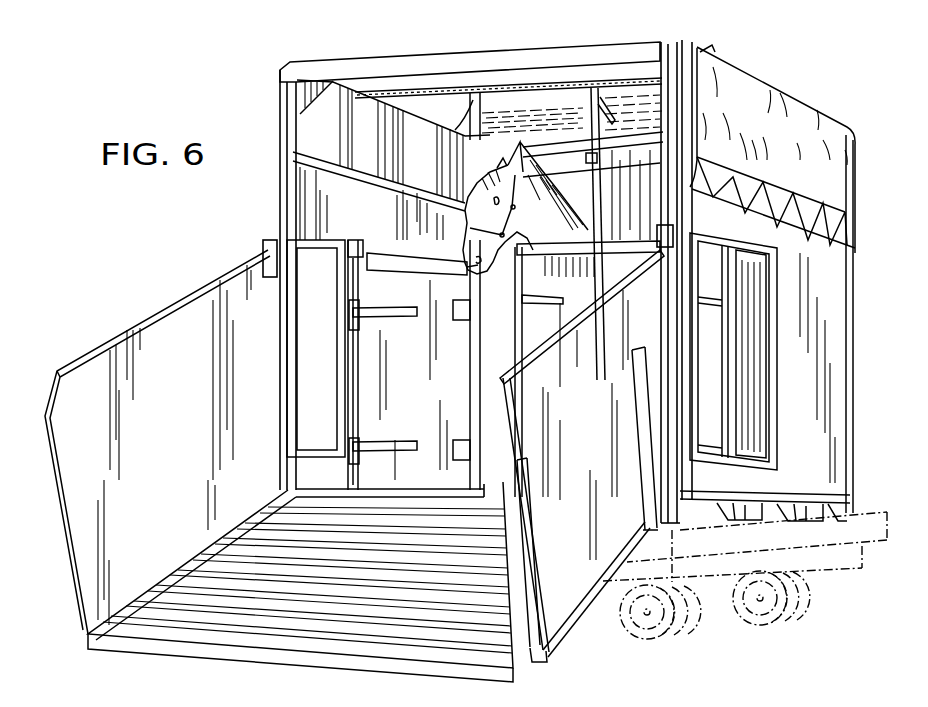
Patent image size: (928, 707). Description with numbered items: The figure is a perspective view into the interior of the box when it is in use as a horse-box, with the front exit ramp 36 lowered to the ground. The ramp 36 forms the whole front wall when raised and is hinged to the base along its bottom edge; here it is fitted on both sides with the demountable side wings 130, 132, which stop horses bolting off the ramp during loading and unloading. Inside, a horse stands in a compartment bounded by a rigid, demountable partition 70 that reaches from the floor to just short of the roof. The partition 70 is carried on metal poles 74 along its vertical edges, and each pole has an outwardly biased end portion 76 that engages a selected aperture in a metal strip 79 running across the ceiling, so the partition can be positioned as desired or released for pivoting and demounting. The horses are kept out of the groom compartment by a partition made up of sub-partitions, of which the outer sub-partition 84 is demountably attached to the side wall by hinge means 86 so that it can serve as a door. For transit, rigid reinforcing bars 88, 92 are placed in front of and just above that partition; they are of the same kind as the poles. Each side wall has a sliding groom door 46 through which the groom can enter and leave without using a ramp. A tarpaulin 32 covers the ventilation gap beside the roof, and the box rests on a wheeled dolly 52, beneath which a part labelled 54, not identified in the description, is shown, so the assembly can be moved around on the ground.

The tarpaulin 32 is at (840, 150).
The ramp 36 is at (325, 660).
The sliding groom door 46 is at (326, 365).
The wheeled dolly 52 is at (866, 568).
The wheels 54 is at (707, 627).
The partition 70 is at (618, 172).
The metal pole 74 is at (598, 112).
The biased portion 76 is at (489, 96).
The metal strip 79 is at (407, 90).
The sub-partition 84 is at (419, 425).
The hinge means 86 is at (358, 316).
The reinforcing bar 88 is at (548, 327).
The reinforcing bar 92 is at (396, 255).
The side wing 130 is at (601, 460).
The side wing 132 is at (190, 456).